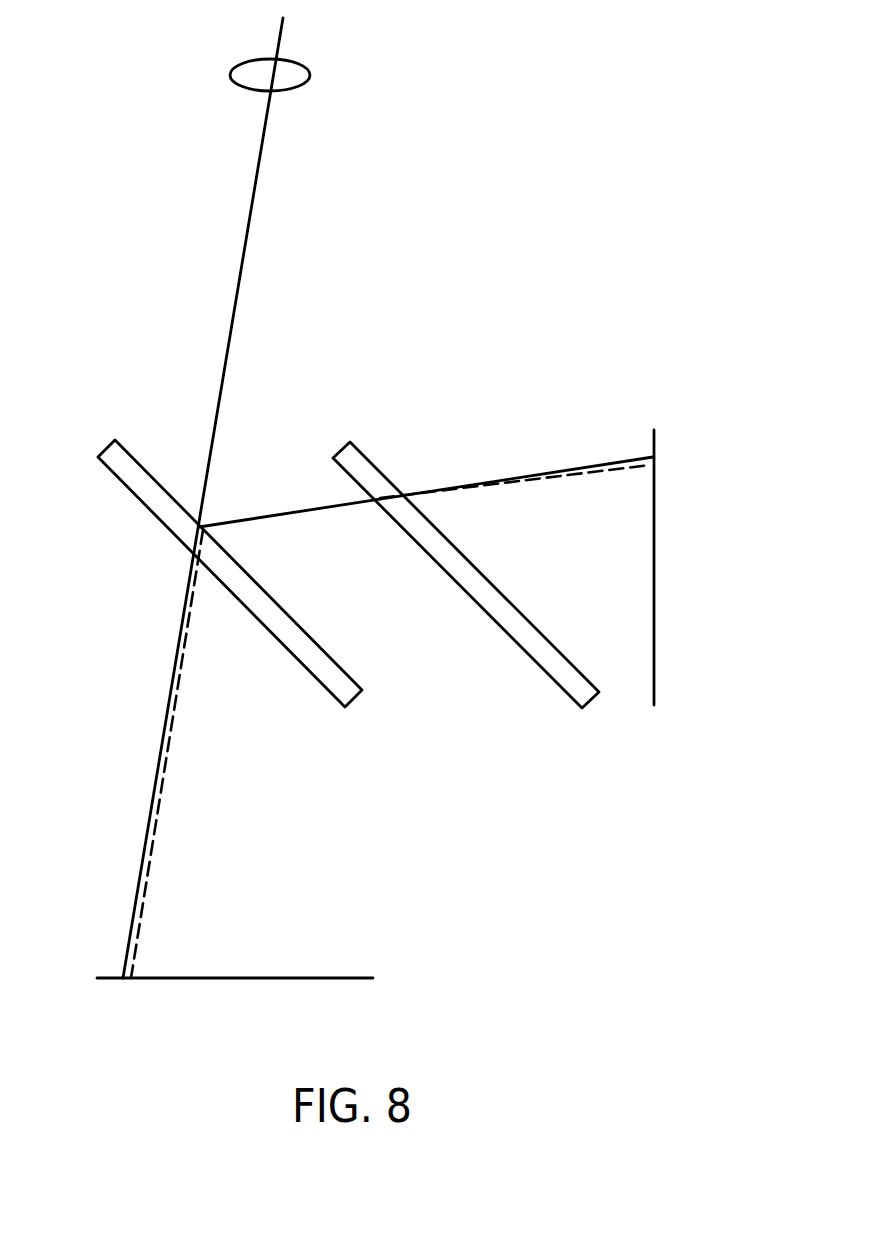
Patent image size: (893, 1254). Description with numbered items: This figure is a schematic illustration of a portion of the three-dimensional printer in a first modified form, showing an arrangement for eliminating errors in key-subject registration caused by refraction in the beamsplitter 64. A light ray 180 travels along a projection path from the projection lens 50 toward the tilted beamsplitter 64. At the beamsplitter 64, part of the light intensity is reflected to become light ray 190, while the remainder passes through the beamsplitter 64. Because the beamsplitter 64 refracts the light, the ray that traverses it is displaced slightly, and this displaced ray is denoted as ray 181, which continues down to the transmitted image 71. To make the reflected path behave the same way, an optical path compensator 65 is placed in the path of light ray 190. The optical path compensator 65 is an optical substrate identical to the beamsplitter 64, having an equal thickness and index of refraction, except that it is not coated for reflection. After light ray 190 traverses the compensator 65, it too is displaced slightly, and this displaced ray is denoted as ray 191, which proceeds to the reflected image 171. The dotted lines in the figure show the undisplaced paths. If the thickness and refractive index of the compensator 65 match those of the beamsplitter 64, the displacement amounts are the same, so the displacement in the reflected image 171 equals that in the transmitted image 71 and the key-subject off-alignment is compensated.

The projection lens 50 is at (298, 60).
The light ray 180 is at (233, 312).
The displaced ray 181 is at (162, 712).
The light ray 190 is at (257, 517).
The displaced ray 191 is at (480, 478).
The beamsplitter 64 is at (357, 685).
The optical path compensator 65 is at (555, 643).
The reflected image 171 is at (657, 433).
The transmitted image 71 is at (350, 978).